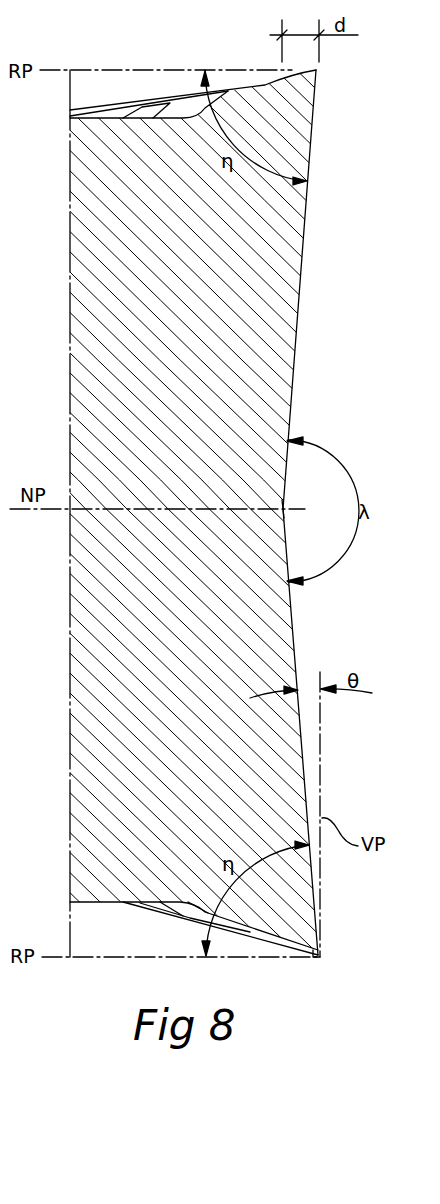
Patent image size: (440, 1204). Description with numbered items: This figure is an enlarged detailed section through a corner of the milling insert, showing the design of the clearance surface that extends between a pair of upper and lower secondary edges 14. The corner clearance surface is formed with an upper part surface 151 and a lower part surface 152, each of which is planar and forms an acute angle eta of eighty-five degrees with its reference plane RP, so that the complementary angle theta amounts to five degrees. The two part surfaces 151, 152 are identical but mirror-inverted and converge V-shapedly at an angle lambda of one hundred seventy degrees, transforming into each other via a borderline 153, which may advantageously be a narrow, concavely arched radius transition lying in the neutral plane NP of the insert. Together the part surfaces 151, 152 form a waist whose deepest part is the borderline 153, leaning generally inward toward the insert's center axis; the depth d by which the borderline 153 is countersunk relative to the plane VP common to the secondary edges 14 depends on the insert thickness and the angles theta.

The secondary edge 14 is at (320, 70).
The upper part surface 151 is at (307, 235).
The lower part surface 152 is at (304, 765).
The borderline 153 is at (285, 512).